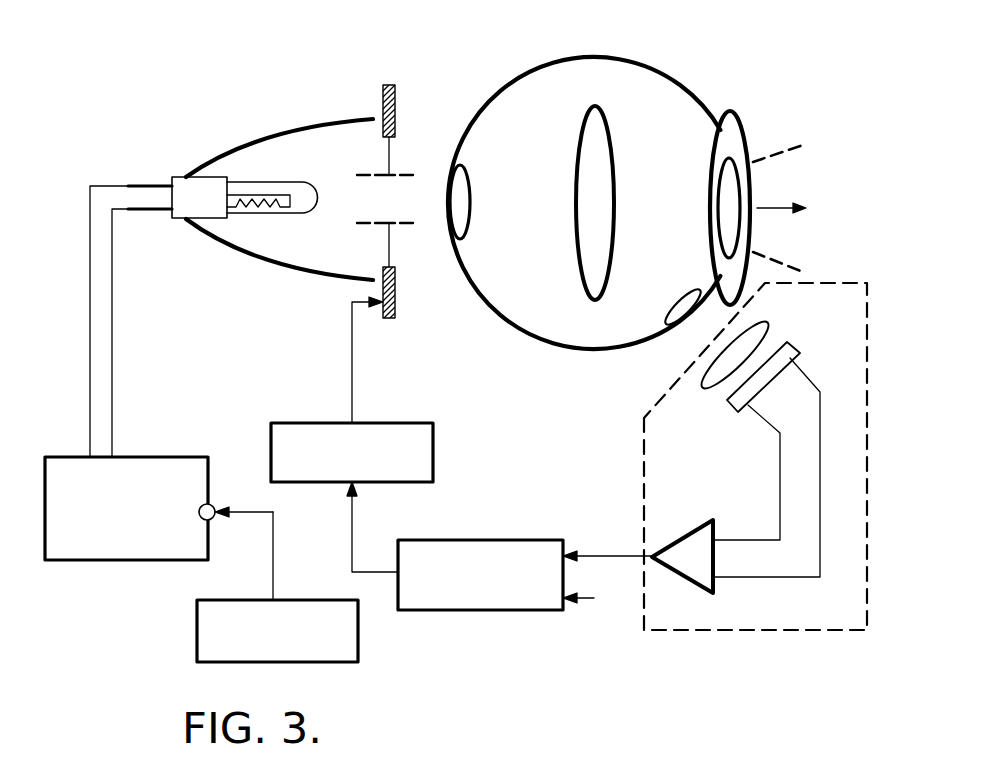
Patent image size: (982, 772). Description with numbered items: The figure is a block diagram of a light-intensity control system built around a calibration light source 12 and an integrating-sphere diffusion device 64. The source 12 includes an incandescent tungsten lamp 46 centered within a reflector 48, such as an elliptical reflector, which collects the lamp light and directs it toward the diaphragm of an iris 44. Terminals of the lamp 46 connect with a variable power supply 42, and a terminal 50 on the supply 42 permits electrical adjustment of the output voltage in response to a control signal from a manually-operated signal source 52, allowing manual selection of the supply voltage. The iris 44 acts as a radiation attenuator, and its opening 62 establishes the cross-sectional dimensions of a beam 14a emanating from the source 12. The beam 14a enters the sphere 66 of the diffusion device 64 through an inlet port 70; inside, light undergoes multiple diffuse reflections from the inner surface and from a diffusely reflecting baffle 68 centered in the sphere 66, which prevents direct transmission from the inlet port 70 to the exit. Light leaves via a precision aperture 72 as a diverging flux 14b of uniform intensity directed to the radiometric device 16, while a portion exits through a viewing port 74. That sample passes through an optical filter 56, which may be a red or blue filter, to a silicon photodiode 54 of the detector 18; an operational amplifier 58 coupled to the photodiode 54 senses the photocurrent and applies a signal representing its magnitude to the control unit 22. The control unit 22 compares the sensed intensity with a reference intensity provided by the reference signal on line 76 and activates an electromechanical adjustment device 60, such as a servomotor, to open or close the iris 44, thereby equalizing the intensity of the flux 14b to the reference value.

The calibration light source 12 is at (231, 276).
The beam 14a is at (405, 172).
The diverging flux 14b is at (783, 150).
The radiometric device 16 is at (796, 208).
The detector 18 is at (755, 484).
The control unit 22 is at (563, 540).
The variable power supply 42 is at (208, 456).
The iris 44 is at (383, 87).
The incandescent tungsten lamp 46 is at (307, 182).
The reflector 48 is at (246, 142).
The terminal 50 is at (213, 505).
The manually-operated signal source 52 is at (197, 662).
The silicon photodiode 54 is at (735, 412).
The optical filter 56 is at (772, 328).
The operational amplifier 58 is at (683, 578).
The electromechanical adjustment device 60 is at (433, 423).
The iris opening 62 is at (390, 227).
The light-diffusion device 64 is at (588, 204).
The integrating sphere 66 is at (622, 58).
The diffusely reflecting baffle 68 is at (595, 302).
The inlet port 70 is at (457, 236).
The precision aperture 72 is at (722, 113).
The viewing port 74 is at (683, 318).
The reference signal line 76 is at (583, 602).